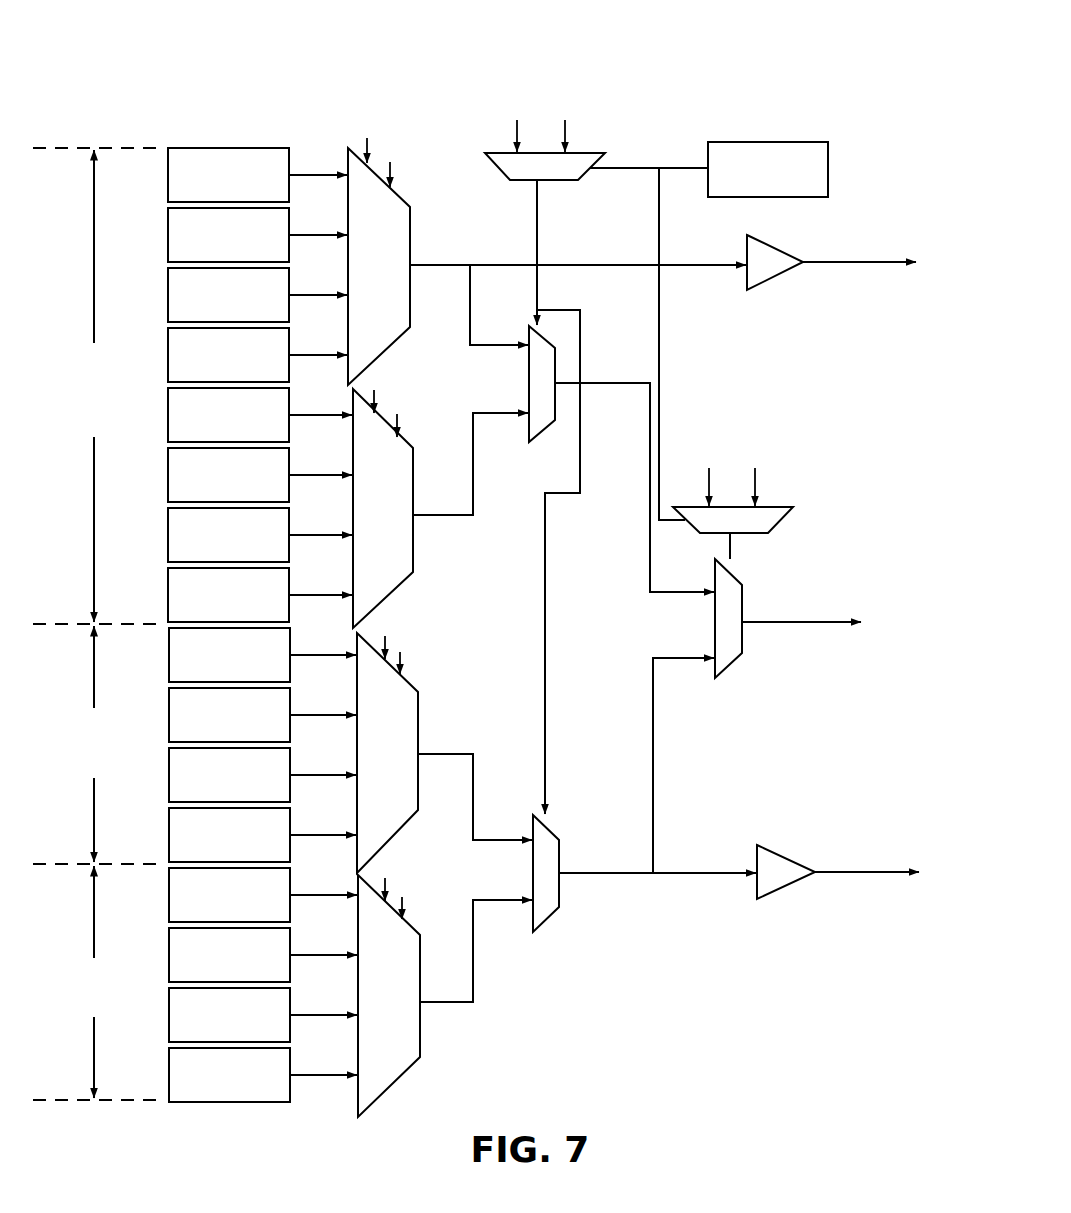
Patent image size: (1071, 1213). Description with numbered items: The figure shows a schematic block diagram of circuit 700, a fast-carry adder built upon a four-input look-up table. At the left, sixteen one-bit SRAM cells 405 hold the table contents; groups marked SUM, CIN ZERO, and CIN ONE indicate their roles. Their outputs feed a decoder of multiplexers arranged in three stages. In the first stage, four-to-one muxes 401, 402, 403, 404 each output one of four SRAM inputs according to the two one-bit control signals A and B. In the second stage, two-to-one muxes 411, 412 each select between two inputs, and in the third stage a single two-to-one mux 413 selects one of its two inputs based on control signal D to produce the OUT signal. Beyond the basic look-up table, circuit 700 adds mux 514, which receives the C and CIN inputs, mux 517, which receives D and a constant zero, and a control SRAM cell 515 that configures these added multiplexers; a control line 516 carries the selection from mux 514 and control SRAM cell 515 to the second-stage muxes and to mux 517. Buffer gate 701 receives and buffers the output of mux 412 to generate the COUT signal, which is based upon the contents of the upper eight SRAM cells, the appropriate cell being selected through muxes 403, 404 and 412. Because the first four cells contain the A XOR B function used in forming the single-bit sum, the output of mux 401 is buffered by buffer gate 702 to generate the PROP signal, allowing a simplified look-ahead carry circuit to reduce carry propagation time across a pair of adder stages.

The circuit 700 is at (476, 582).
The SRAM cells 405 is at (262, 631).
The mux 401 is at (547, 250).
The mux 402 is at (440, 498).
The mux 403 is at (444, 743).
The mux 404 is at (445, 986).
The mux 411 is at (586, 459).
The mux 412 is at (644, 888).
The mux 413 is at (757, 716).
The mux 514 is at (589, 453).
The control SRAM cell 515 is at (791, 157).
The control signal line 516 is at (645, 344).
The mux 517 is at (763, 500).
The buffer gate 701 is at (838, 885).
The buffer gate 702 is at (831, 280).